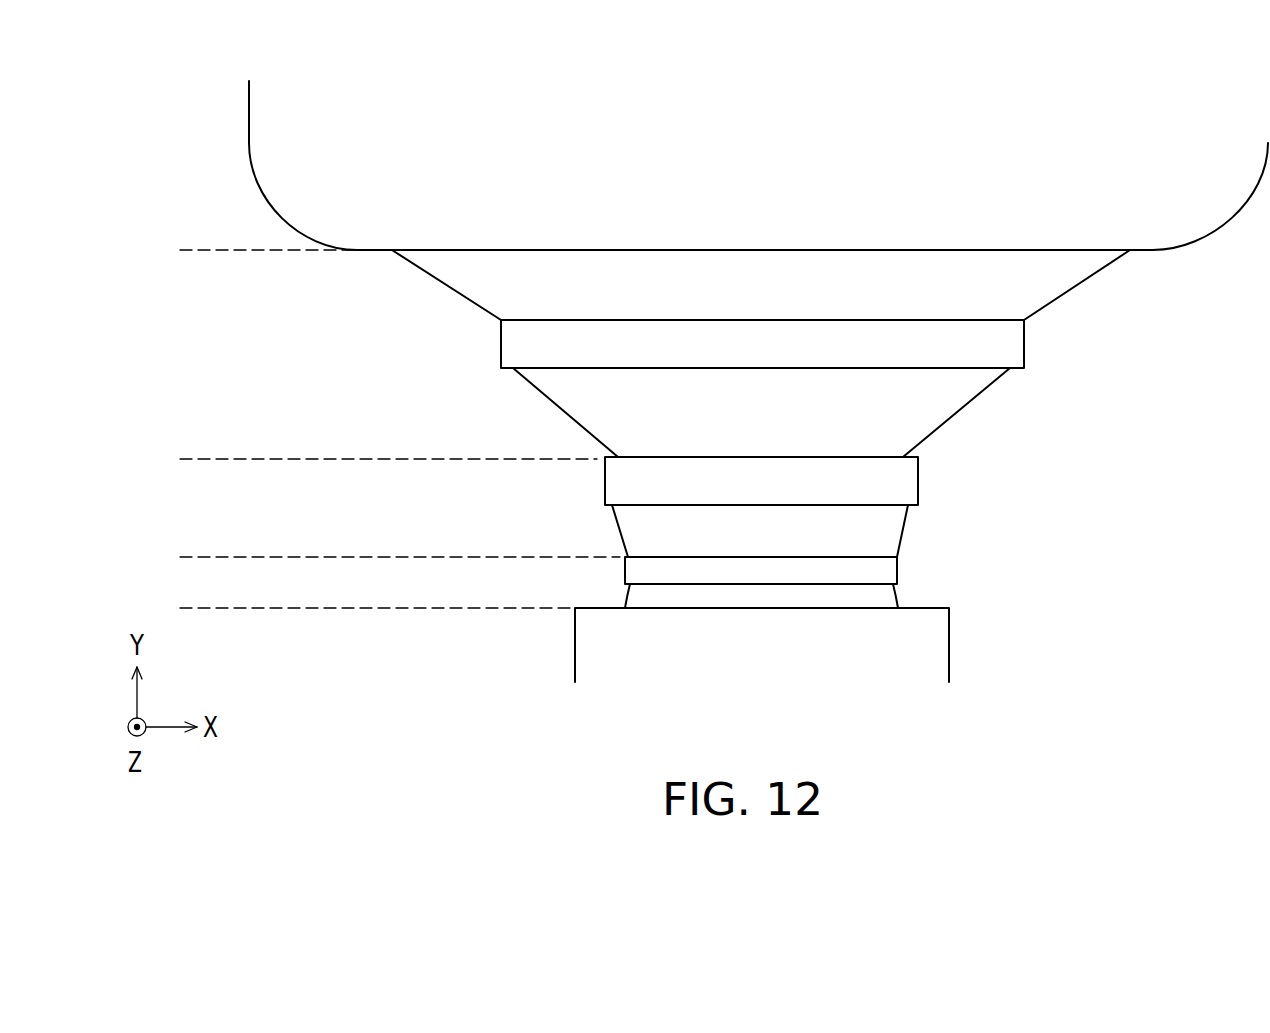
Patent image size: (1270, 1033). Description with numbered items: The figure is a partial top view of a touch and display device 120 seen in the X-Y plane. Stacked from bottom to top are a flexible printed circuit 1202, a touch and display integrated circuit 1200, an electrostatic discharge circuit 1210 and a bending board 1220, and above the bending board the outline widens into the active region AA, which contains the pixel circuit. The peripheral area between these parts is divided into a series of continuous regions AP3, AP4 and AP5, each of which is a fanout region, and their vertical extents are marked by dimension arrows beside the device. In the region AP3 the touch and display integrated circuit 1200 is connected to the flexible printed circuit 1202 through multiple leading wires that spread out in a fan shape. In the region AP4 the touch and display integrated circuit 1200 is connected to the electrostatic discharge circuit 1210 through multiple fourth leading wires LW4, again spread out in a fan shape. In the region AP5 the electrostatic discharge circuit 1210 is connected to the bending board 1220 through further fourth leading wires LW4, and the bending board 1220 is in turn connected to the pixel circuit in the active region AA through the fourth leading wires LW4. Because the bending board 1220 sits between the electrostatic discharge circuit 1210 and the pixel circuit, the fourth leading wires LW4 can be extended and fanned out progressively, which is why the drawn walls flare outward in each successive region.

The touch and display device 120 is at (1262, 705).
The touch and display integrated circuit 1200 is at (892, 573).
The flexible printed circuit 1202 is at (938, 643).
The electrostatic discharge circuit 1210 is at (910, 483).
The bending board 1220 is at (1012, 346).
The fourth leading wires LW4 is at (1083, 282).
The active region AA is at (205, 250).
The region AP3 is at (277, 557).
The region AP4 is at (277, 459).
The region AP5 is at (277, 250).